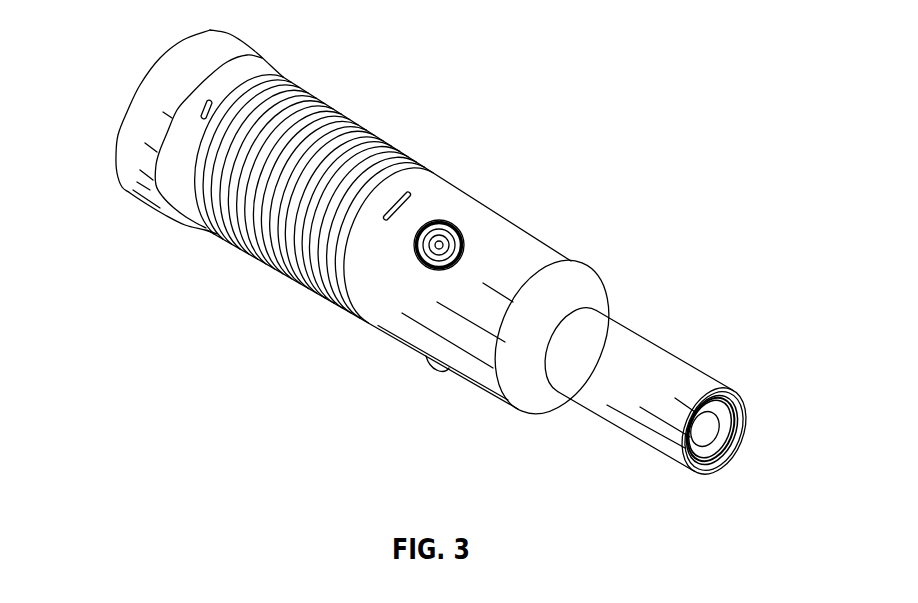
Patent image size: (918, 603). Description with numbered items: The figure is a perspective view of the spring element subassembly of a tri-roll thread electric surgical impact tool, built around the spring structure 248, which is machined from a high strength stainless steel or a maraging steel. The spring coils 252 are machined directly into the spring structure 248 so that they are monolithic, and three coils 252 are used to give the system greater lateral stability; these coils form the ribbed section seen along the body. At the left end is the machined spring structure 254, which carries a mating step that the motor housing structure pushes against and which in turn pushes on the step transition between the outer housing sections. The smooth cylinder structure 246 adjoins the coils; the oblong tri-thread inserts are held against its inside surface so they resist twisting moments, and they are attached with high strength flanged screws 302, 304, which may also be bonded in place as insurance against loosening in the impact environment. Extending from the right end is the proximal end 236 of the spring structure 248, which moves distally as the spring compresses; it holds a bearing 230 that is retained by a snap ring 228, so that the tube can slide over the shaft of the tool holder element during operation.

The snap ring 228 is at (735, 428).
The bearing 230 is at (733, 402).
The proximal end 236 is at (625, 340).
The cylinder structure 246 is at (386, 331).
The spring structure 248 is at (232, 291).
The spring coils 252 is at (227, 237).
The machined spring structure 254 is at (126, 188).
The flanged screw 302 is at (440, 371).
The flanged screw 304 is at (446, 224).